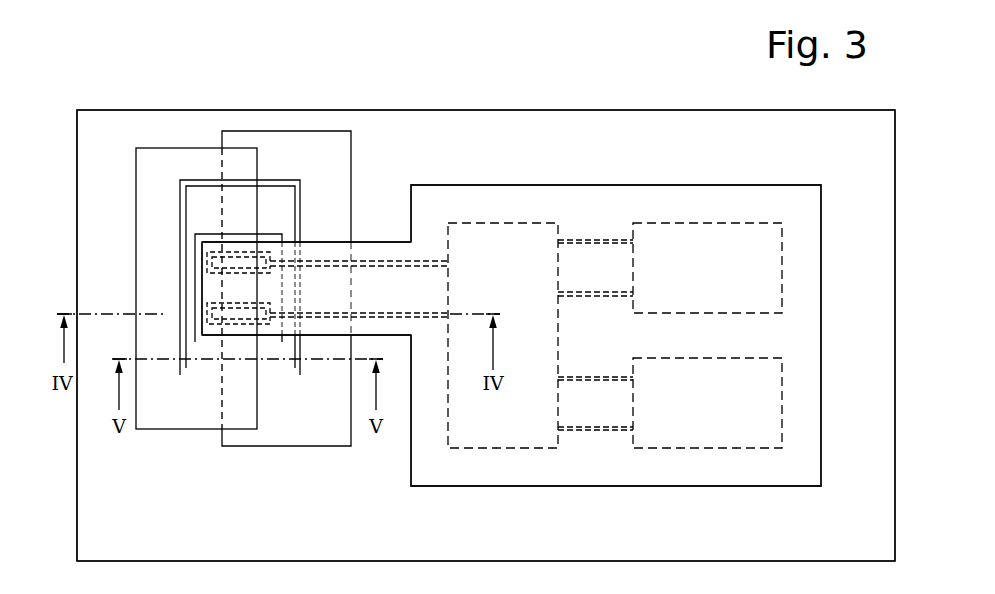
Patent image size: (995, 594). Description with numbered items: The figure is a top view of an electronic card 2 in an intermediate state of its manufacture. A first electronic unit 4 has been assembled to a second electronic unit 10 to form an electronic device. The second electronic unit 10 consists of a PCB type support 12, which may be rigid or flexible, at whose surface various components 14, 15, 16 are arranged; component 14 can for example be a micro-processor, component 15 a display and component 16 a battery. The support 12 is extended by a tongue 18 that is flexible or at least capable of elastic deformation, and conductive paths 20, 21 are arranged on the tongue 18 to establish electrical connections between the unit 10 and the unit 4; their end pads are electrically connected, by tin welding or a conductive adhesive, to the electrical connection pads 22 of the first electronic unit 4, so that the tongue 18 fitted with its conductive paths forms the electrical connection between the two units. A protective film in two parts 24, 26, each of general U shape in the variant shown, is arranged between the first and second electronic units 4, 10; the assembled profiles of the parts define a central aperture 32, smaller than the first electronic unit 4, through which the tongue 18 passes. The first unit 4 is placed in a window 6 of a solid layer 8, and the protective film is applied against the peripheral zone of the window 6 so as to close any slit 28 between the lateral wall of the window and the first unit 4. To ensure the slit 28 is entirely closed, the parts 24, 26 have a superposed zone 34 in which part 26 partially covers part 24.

The electronic card 2 is at (523, 78).
The first electronic unit 4 is at (203, 195).
The window 6 is at (178, 211).
The solid layer 8 is at (588, 135).
The second electronic unit 10 is at (637, 182).
The PCB type support 12 is at (470, 195).
The component 14 is at (540, 335).
The component 15 is at (707, 268).
The component 16 is at (707, 403).
The tongue 18 is at (369, 240).
The conductive path 20 is at (322, 323).
The conductive path 21 is at (323, 254).
The electrical connection pads 22 is at (267, 329).
The protective film part 24 is at (265, 142).
The protective film part 26 is at (160, 158).
The slit 28 is at (182, 268).
The central aperture 32 is at (207, 340).
The superposed zone 34 is at (239, 406).